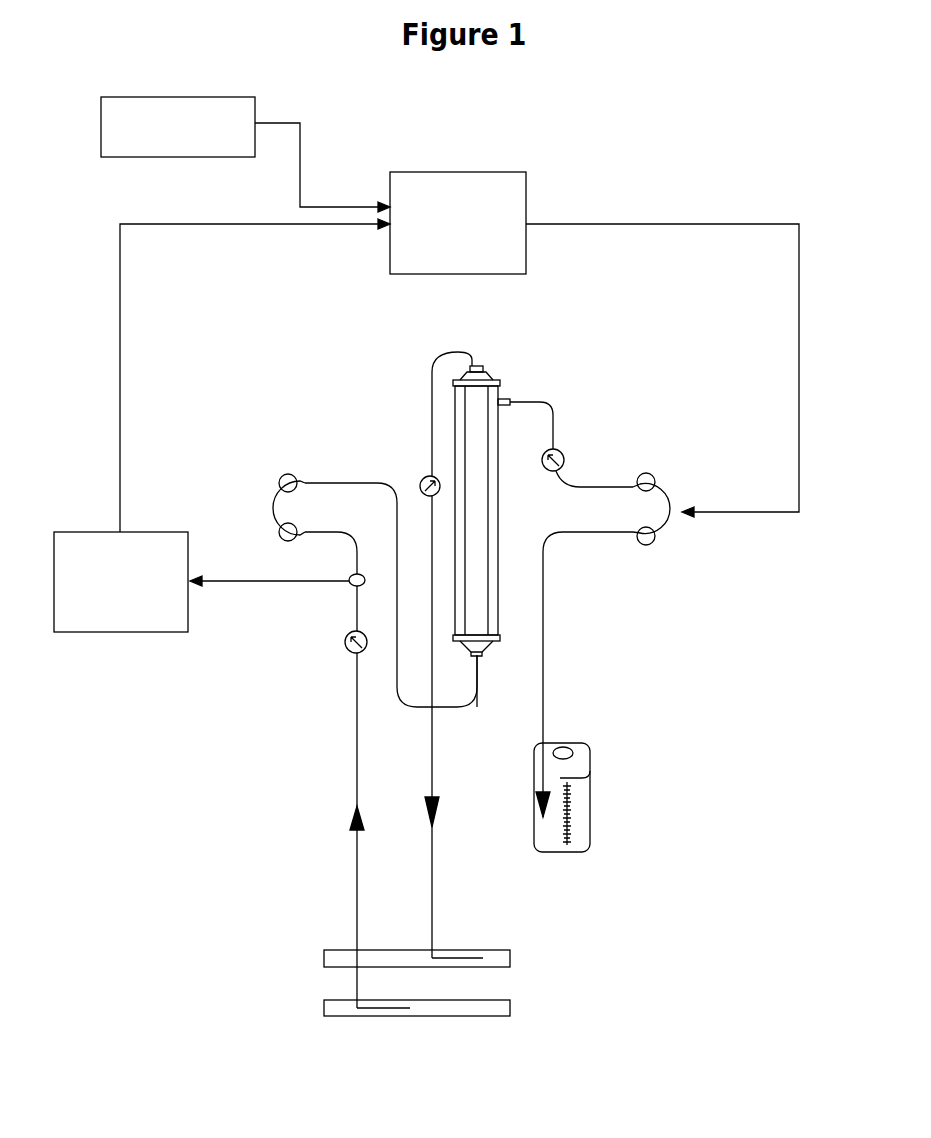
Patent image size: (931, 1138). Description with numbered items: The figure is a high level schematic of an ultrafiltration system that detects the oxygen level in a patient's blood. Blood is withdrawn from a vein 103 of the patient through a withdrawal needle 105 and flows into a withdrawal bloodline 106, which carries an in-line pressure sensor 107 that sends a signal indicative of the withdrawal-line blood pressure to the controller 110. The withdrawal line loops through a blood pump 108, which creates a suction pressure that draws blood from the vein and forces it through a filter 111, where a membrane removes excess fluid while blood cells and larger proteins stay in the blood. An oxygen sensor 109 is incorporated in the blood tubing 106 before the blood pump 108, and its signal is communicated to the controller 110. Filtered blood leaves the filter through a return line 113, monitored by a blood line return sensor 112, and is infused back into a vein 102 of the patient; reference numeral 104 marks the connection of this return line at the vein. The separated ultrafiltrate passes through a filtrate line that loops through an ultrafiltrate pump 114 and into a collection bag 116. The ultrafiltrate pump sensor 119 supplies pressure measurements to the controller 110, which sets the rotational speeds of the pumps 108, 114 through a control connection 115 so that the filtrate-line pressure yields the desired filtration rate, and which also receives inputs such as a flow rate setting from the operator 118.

The vein 102 is at (510, 958).
The vein 103 is at (510, 1008).
The inlet port 104 is at (434, 958).
The withdrawal needle 105 is at (383, 1010).
The withdrawal bloodline 106 is at (355, 830).
The in-line pressure sensor 107 is at (345, 650).
The blood pump 108 is at (290, 478).
The oxygen sensor 109 is at (120, 632).
The controller 110 is at (476, 190).
The filter 111 is at (494, 379).
The blood line return sensor 112 is at (425, 476).
The return line 113 is at (439, 822).
The ultrafiltrate pump 114 is at (646, 479).
The control line 115 is at (799, 372).
The collection bag 116 is at (590, 743).
The operator 118 is at (158, 158).
The ultrafiltrate pump sensor 119 is at (566, 458).